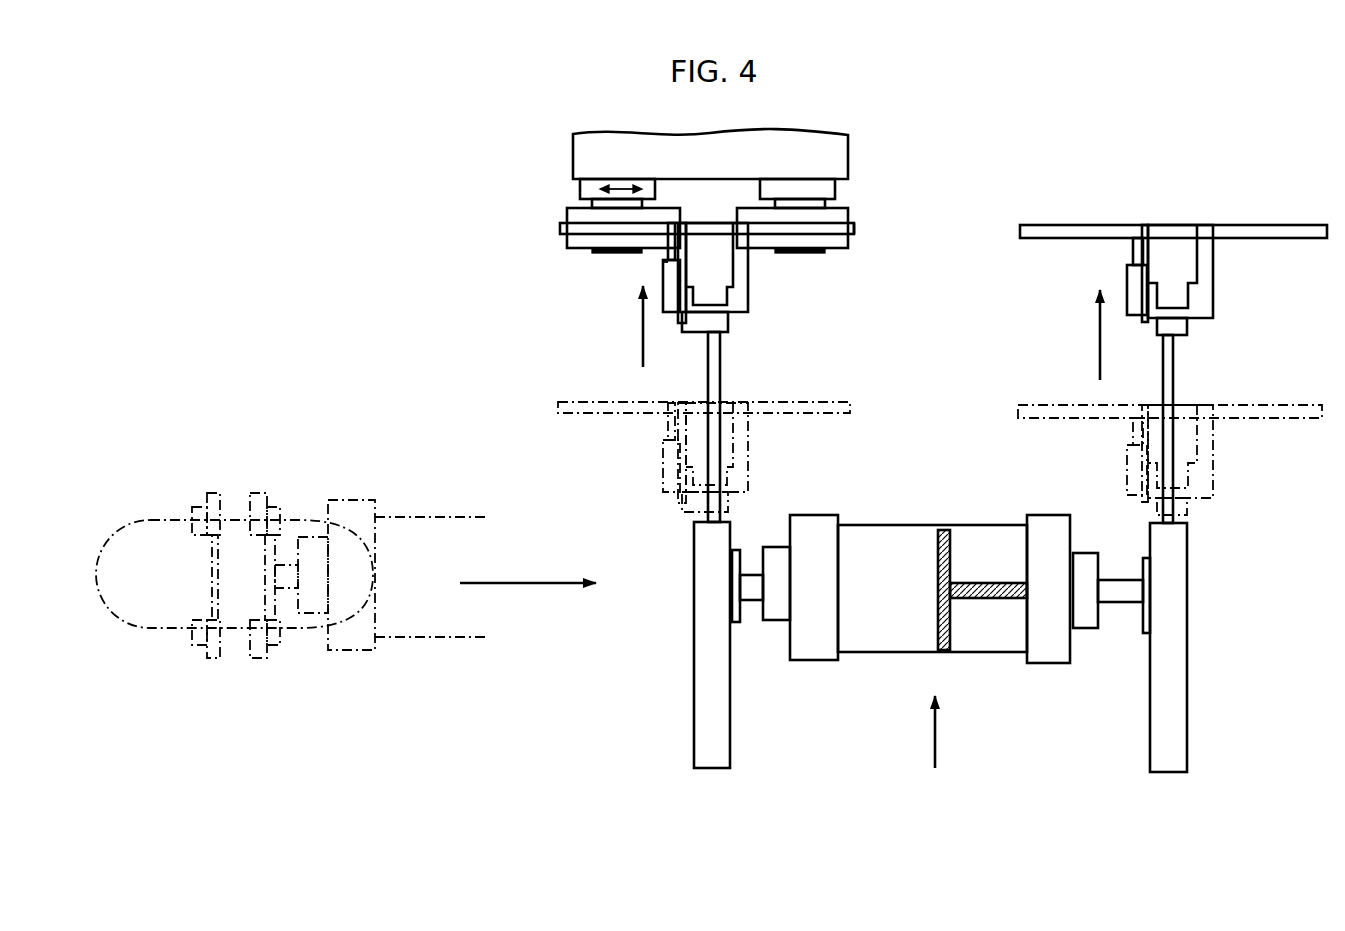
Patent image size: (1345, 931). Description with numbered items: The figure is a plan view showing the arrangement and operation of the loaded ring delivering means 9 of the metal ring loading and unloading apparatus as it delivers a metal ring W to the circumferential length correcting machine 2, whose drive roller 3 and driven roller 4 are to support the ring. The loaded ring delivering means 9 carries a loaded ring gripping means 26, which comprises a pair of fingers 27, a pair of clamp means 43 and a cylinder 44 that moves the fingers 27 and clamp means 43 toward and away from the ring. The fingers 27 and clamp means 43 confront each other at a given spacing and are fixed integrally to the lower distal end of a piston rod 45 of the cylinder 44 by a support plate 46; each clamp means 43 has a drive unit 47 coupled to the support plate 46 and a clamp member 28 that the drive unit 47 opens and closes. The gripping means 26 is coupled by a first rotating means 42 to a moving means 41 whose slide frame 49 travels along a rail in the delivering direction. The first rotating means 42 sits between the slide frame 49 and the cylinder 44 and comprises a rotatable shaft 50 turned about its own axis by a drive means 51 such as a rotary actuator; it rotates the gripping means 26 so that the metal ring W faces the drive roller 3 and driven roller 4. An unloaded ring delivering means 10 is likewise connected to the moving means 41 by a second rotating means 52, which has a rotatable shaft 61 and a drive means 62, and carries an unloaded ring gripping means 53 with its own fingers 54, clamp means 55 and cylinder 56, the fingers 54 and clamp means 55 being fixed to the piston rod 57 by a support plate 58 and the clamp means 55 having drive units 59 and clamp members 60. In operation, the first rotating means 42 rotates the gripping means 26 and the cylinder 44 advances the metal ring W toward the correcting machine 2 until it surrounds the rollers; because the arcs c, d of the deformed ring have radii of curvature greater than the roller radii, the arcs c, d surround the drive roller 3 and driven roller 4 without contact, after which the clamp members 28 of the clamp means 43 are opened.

The circumferential length correcting machine 2 is at (847, 155).
The drive roller 3 is at (847, 212).
The driven roller 4 is at (567, 212).
The arc c is at (560, 228).
The arc d is at (853, 228).
The loaded ring delivering means 9 is at (670, 730).
The unloaded ring delivering means 10 is at (1232, 655).
The loaded ring gripping means 26 is at (752, 329).
The fingers 27 is at (748, 278).
The clamp members 28 is at (668, 252).
The moving means 41 is at (935, 753).
The first rotating means 42 is at (775, 636).
The clamp means 43 is at (668, 322).
The cylinder 44 is at (711, 755).
The piston rod 45 is at (720, 375).
The support plate 46 is at (697, 328).
The drive units 47 is at (663, 267).
The slide frame 49 is at (888, 631).
The rotatable shaft 50 is at (753, 587).
The drive means 51 is at (775, 558).
The second rotating means 52 is at (1086, 652).
The unloaded ring gripping means 53 is at (1225, 504).
The fingers 54 is at (1213, 275).
The clamp means 55 is at (1131, 325).
The cylinder 56 is at (1168, 755).
The piston rod 57 is at (1173, 362).
The support plate 58 is at (1190, 323).
The drive units 59 is at (1127, 278).
The clamp members 60 is at (1133, 250).
The rotatable shaft 61 is at (1123, 597).
The drive means 62 is at (1080, 606).
The metal ring W is at (828, 233).